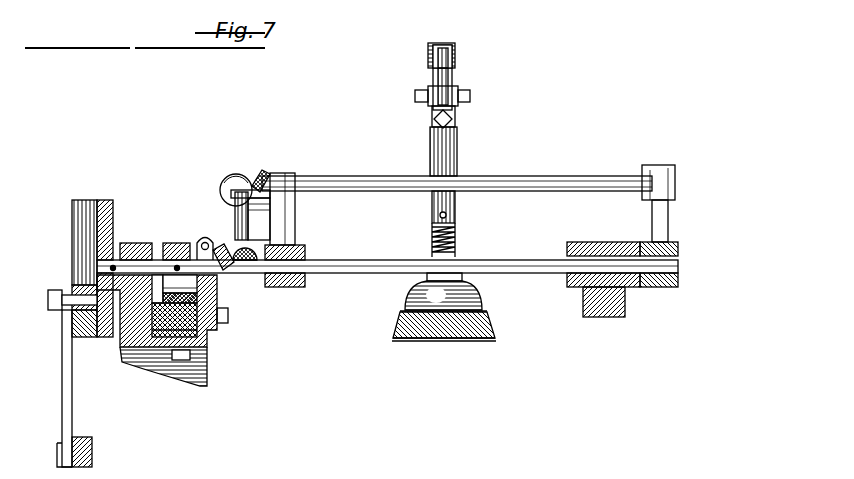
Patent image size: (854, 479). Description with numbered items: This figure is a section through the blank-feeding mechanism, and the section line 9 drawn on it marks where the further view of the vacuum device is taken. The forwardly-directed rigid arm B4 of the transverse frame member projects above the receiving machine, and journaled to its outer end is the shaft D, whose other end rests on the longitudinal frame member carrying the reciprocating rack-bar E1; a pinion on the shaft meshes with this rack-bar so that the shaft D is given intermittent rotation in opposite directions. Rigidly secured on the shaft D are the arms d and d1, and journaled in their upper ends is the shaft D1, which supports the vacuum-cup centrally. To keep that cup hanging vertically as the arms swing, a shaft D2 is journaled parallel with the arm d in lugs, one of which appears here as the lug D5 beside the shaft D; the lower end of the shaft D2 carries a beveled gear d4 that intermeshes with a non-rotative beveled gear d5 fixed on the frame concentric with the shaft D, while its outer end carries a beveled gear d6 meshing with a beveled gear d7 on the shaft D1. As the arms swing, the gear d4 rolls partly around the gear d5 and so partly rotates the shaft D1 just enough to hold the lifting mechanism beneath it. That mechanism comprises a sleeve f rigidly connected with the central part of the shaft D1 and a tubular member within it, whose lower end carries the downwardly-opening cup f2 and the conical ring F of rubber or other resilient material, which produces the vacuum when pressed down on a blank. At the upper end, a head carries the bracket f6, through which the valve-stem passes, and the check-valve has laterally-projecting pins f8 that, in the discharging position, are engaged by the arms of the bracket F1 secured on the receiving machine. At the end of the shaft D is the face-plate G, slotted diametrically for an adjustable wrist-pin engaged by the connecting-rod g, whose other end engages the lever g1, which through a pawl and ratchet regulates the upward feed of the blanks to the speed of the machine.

The face-plate G is at (100, 205).
The connecting-rod g is at (62, 397).
The lever g1 is at (92, 445).
The shaft D is at (518, 272).
The shaft D1 is at (530, 192).
The shaft D2 is at (211, 236).
The pivot lug D5 is at (200, 240).
The rack-bar E1 is at (228, 322).
The arm d is at (285, 229).
The arm d1 is at (665, 215).
The beveled gear d4 is at (240, 262).
The non-rotative beveled gear d5 is at (230, 216).
The beveled gear d6 is at (233, 184).
The beveled gear d7 is at (264, 171).
The rigid arm B4 is at (622, 286).
The sleeve f is at (456, 163).
The downwardly-opening cup f2 is at (405, 304).
The bracket f6 is at (446, 72).
The laterally-projecting pins f8 is at (470, 95).
The bracket F1 is at (470, 105).
The conical ring of resilient material F is at (495, 328).
The section line of Fig. 9 is at (457, 33).